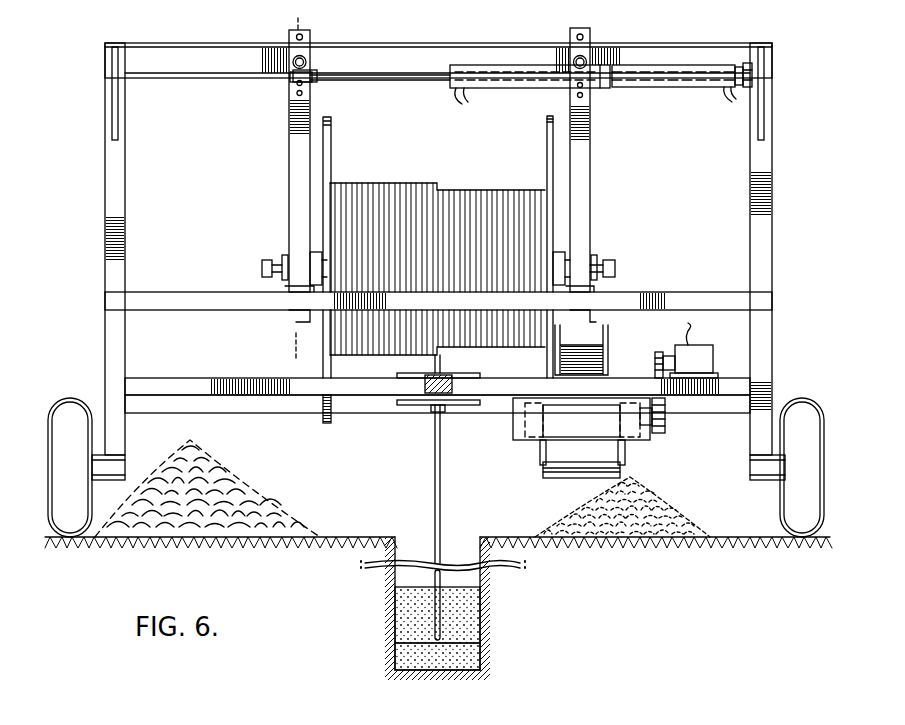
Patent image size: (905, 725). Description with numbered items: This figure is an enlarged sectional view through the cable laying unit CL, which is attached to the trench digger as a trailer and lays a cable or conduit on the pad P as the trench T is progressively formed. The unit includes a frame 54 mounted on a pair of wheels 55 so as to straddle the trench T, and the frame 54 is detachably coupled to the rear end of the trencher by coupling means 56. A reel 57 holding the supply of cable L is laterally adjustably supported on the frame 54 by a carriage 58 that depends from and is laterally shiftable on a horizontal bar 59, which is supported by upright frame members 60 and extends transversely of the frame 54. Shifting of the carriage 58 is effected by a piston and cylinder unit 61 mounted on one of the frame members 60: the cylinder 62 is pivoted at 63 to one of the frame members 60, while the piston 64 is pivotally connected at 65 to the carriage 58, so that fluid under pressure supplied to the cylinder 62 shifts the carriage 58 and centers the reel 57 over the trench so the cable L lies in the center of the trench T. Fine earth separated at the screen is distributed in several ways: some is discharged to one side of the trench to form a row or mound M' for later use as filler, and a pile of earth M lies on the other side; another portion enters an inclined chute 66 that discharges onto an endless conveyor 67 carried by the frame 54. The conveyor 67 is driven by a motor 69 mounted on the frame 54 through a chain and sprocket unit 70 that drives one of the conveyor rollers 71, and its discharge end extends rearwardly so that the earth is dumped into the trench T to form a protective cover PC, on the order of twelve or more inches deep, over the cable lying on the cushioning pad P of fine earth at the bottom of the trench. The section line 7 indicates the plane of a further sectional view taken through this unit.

The section line 7- 7 is at (290, 27).
The frame 54 is at (661, 290).
The wheels 55 is at (70, 398).
The coupling means 56 is at (433, 396).
The reel 57 is at (333, 157).
The carriage 58 is at (288, 166).
The horizontal bar 59 is at (208, 58).
The upright frame members 60 is at (118, 174).
The piston and cylinder unit 61 is at (503, 93).
The cylinder 62 is at (697, 81).
The pivot 63 is at (748, 86).
The piston 64 is at (392, 81).
The pivot connection 65 is at (291, 86).
The chute 66 is at (607, 336).
The endless conveyor 67 is at (547, 480).
The motor 69 is at (698, 350).
The chain and sprocket unit 70 is at (654, 364).
The conveyor roller 71 is at (650, 431).
The cable laying unit CL is at (103, 211).
The cable L is at (493, 187).
The material pile M is at (207, 488).
The row or mound M' is at (622, 504).
The trench T is at (402, 553).
The protective cover PC is at (465, 605).
The pad P is at (475, 655).